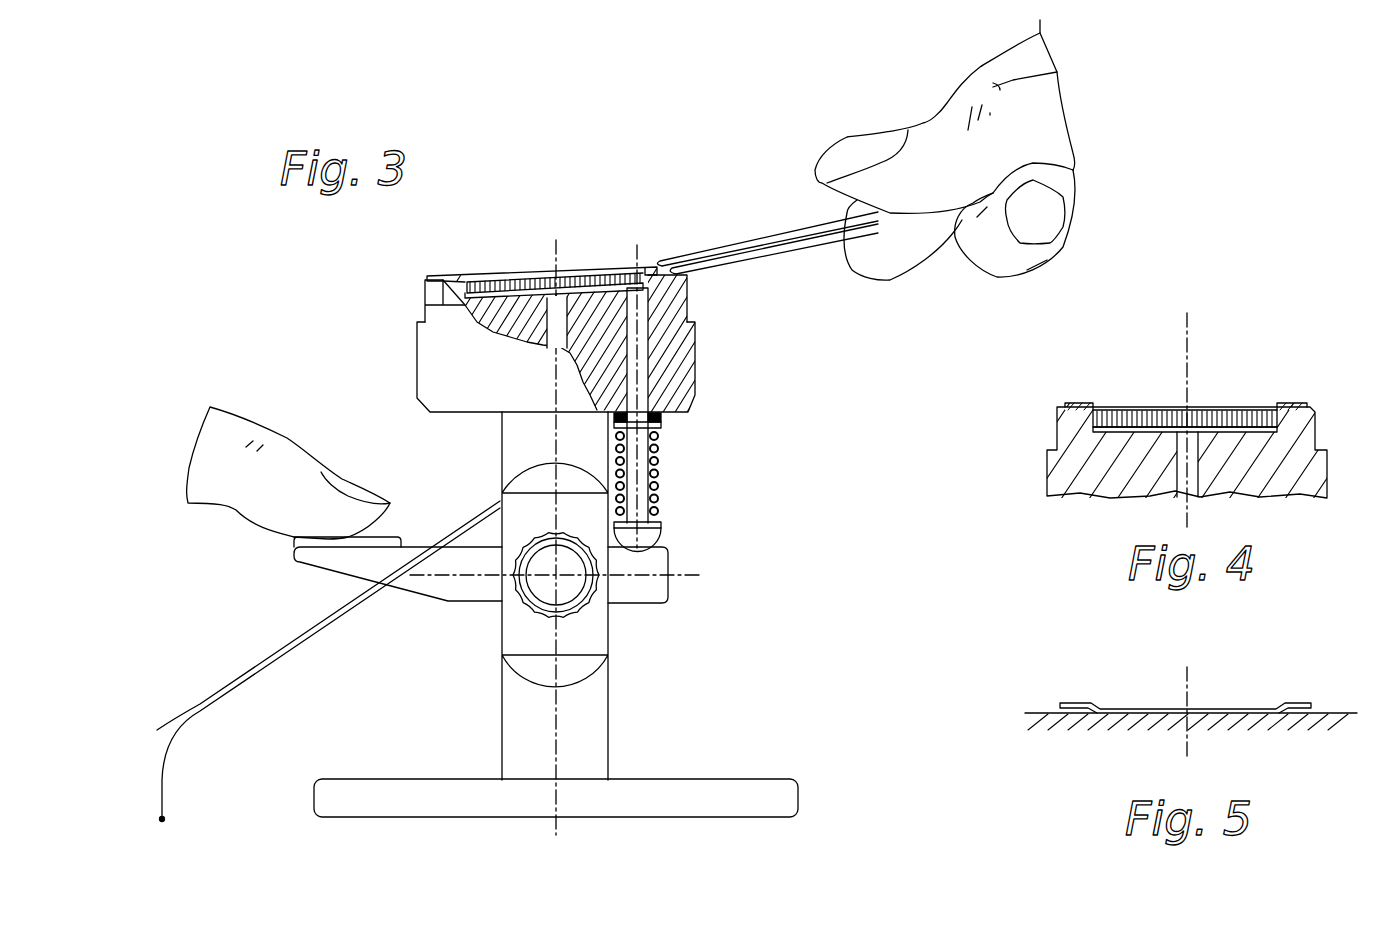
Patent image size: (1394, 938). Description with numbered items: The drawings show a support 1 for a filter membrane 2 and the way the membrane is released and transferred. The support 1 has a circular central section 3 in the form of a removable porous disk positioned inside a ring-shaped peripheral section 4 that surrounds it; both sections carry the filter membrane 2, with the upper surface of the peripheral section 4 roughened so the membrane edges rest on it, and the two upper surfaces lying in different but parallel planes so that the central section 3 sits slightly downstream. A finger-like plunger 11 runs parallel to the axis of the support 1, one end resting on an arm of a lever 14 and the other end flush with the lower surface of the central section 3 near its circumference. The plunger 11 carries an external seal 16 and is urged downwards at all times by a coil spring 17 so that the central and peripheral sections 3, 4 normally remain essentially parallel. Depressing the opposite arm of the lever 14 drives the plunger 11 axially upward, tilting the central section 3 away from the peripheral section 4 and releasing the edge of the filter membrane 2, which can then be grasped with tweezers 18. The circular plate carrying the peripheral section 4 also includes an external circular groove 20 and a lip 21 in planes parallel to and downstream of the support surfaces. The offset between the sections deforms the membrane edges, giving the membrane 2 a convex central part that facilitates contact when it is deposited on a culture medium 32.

In FIG. 3, the support 1 is at (370, 367).
In FIG. 4, the support 1 is at (1343, 419).
In FIG. 3, the filter membrane 2 is at (603, 268).
In FIG. 4, the filter membrane 2 is at (1237, 407).
In FIG. 5, the filter membrane 2 is at (1227, 712).
In FIG. 3, the central section 3 is at (517, 276).
In FIG. 4, the central section 3 is at (1155, 409).
In FIG. 3, the peripheral section 4 is at (673, 303).
In FIG. 4, the peripheral section 4 is at (1067, 431).
In FIG. 3, the plunger 11 is at (644, 453).
In FIG. 3, the lever 14 is at (443, 588).
In FIG. 3, the external seal 16 is at (661, 419).
In FIG. 3, the coil spring 17 is at (658, 515).
In FIG. 3, the tweezers 18 is at (760, 238).
In FIG. 3, the external circular groove 20 is at (430, 305).
In FIG. 3, the lip 21 is at (413, 321).
In FIG. 5, the culture medium 32 is at (1097, 723).